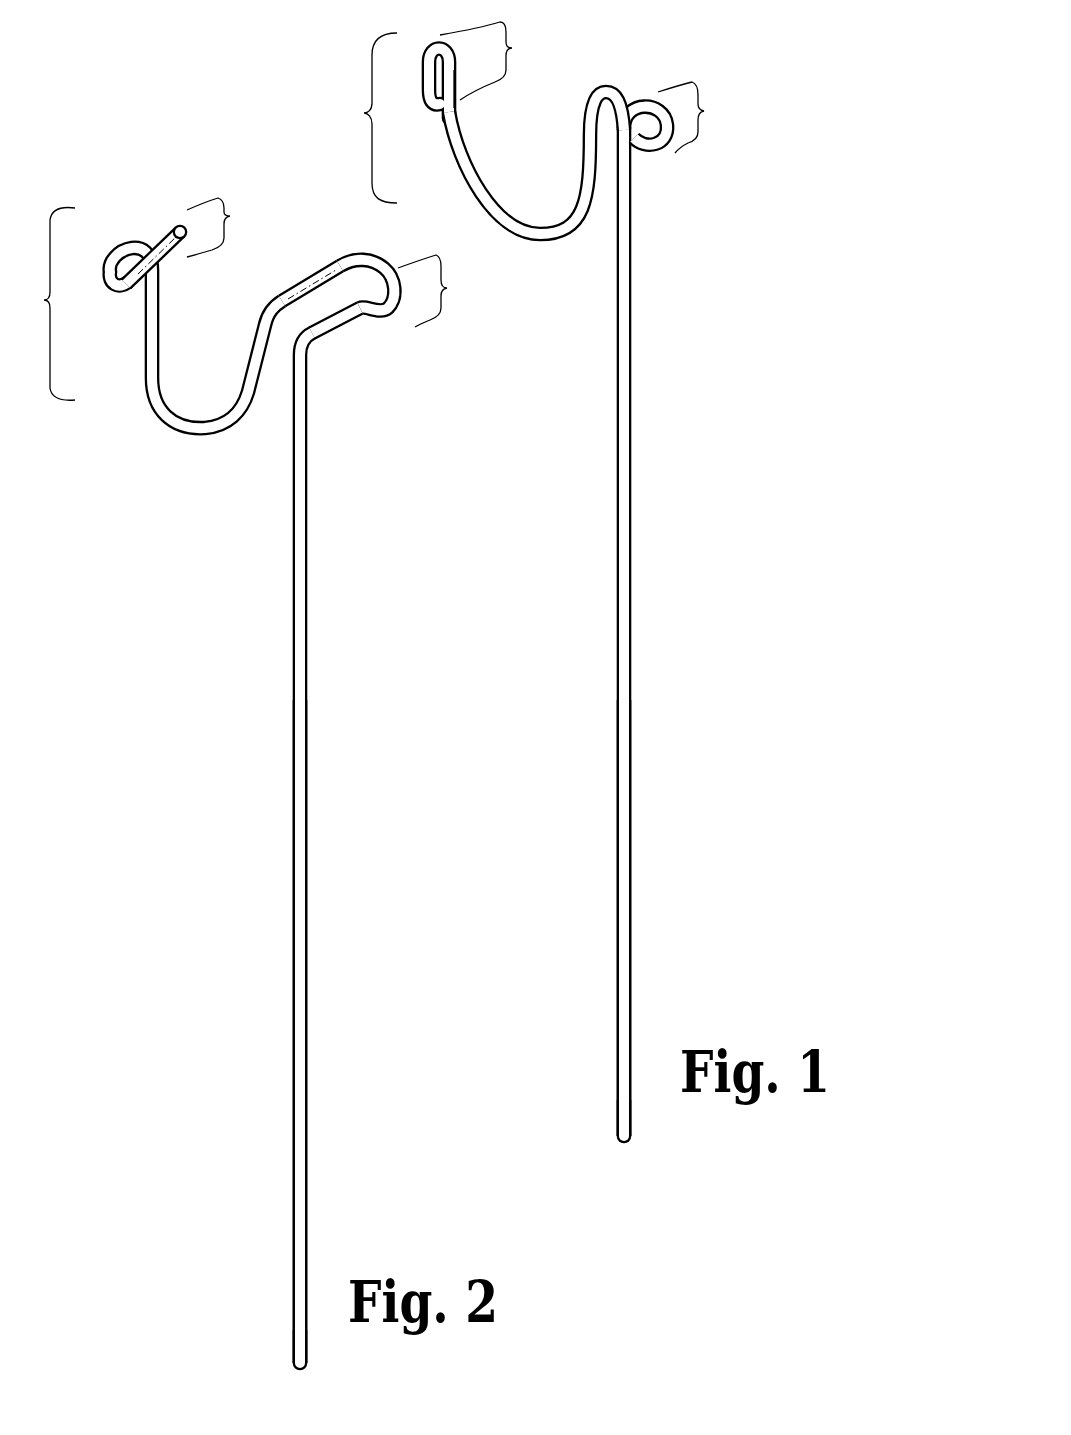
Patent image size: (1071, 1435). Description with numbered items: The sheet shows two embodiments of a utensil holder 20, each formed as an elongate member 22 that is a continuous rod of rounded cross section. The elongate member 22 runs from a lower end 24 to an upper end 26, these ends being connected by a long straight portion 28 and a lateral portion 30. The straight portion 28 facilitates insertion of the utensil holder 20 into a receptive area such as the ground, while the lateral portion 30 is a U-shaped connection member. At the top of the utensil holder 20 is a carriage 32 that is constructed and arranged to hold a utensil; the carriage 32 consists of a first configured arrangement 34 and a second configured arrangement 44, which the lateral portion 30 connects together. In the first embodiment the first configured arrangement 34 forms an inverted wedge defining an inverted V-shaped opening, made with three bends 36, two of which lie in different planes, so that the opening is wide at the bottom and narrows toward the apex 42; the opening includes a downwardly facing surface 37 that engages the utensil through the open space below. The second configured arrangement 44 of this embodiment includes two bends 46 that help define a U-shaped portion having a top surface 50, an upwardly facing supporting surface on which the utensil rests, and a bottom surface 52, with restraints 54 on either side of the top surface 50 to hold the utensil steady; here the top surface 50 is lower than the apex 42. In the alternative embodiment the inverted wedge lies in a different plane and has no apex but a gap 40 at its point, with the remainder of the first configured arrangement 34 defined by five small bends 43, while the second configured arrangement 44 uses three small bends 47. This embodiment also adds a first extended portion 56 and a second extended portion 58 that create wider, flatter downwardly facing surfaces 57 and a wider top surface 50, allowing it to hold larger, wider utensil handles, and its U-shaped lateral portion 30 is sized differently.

In FIG. 1, the utensil holder 20 is at (748, 68).
In FIG. 1, the elongate member 22 is at (628, 452).
In FIG. 2, the elongate member 22 is at (304, 550).
In FIG. 1, the lower end 24 is at (622, 1146).
In FIG. 2, the lower end 24 is at (298, 1370).
In FIG. 1, the upper end 26 is at (452, 76).
In FIG. 2, the upper end 26 is at (183, 224).
In FIG. 1, the straight portion 28 is at (630, 848).
In FIG. 2, the straight portion 28 is at (303, 1000).
In FIG. 1, the lateral portion 30 is at (487, 205).
In FIG. 2, the lateral portion 30 is at (147, 385).
In FIG. 1, the carriage 32 is at (372, 118).
In FIG. 2, the carriage 32 is at (87, 304).
In FIG. 1, the first configured arrangement 34 is at (693, 117).
In FIG. 2, the first configured arrangement 34 is at (434, 291).
In FIG. 1, the bends 36 is at (638, 107).
In FIG. 1, the downwardly facing surface 37 is at (607, 126).
In FIG. 2, the gap 40 is at (281, 318).
In FIG. 1, the apex 42 is at (607, 97).
In FIG. 2, the small bends 43 is at (257, 317).
In FIG. 1, the second configured arrangement 44 is at (489, 61).
In FIG. 2, the second configured arrangement 44 is at (219, 227).
In FIG. 1, the bends 46 is at (427, 48).
In FIG. 2, the small bends 47 is at (157, 248).
In FIG. 1, the top surface 50 is at (425, 73).
In FIG. 2, the top surface 50 is at (147, 248).
In FIG. 1, the bottom surface 52 is at (452, 120).
In FIG. 2, the bottom surface 52 is at (157, 268).
In FIG. 1, the restraints 54 is at (457, 84).
In FIG. 2, the restraints 54 is at (108, 268).
In FIG. 2, the first extended portion 56 is at (327, 262).
In FIG. 2, the downwardly facing surfaces 57 is at (313, 297).
In FIG. 2, the second extended portion 58 is at (152, 250).